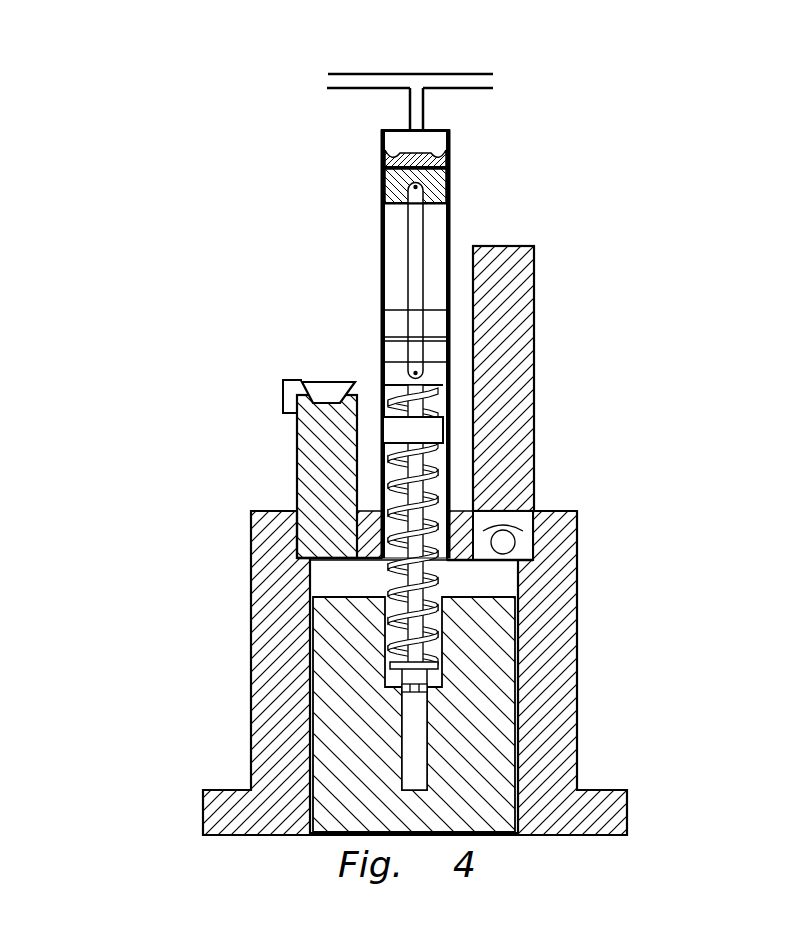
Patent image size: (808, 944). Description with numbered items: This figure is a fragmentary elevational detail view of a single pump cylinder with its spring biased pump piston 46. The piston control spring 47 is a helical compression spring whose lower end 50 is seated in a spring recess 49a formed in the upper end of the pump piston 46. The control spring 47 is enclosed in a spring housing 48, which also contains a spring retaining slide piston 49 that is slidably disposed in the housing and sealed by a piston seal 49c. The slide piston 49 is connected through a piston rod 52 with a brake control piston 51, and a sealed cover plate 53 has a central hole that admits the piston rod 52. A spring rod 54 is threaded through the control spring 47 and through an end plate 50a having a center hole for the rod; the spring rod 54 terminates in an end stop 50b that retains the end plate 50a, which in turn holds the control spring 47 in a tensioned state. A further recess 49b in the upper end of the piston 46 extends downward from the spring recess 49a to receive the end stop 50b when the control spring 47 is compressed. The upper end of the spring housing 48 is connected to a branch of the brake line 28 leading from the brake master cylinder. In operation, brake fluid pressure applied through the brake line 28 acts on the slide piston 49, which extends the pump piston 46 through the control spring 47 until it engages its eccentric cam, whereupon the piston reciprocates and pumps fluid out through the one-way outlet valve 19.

The one-way outlet valve 19 is at (327, 382).
The brake line 28 is at (496, 54).
The pump piston 46 is at (517, 747).
The piston control spring 47 is at (377, 447).
The spring housing 48 is at (450, 227).
The spring retaining slide piston 49 is at (382, 172).
The spring recess 49a is at (445, 598).
The recess 49b is at (430, 730).
The piston seal 49c is at (450, 157).
The lower end of the control spring 50 is at (383, 645).
The end plate 50a is at (383, 673).
The end stop 50b is at (430, 685).
The brake control piston 51 is at (437, 372).
The piston rod 52 is at (405, 248).
The sealed cover plate 53 is at (397, 325).
The spring rod 54 is at (534, 470).